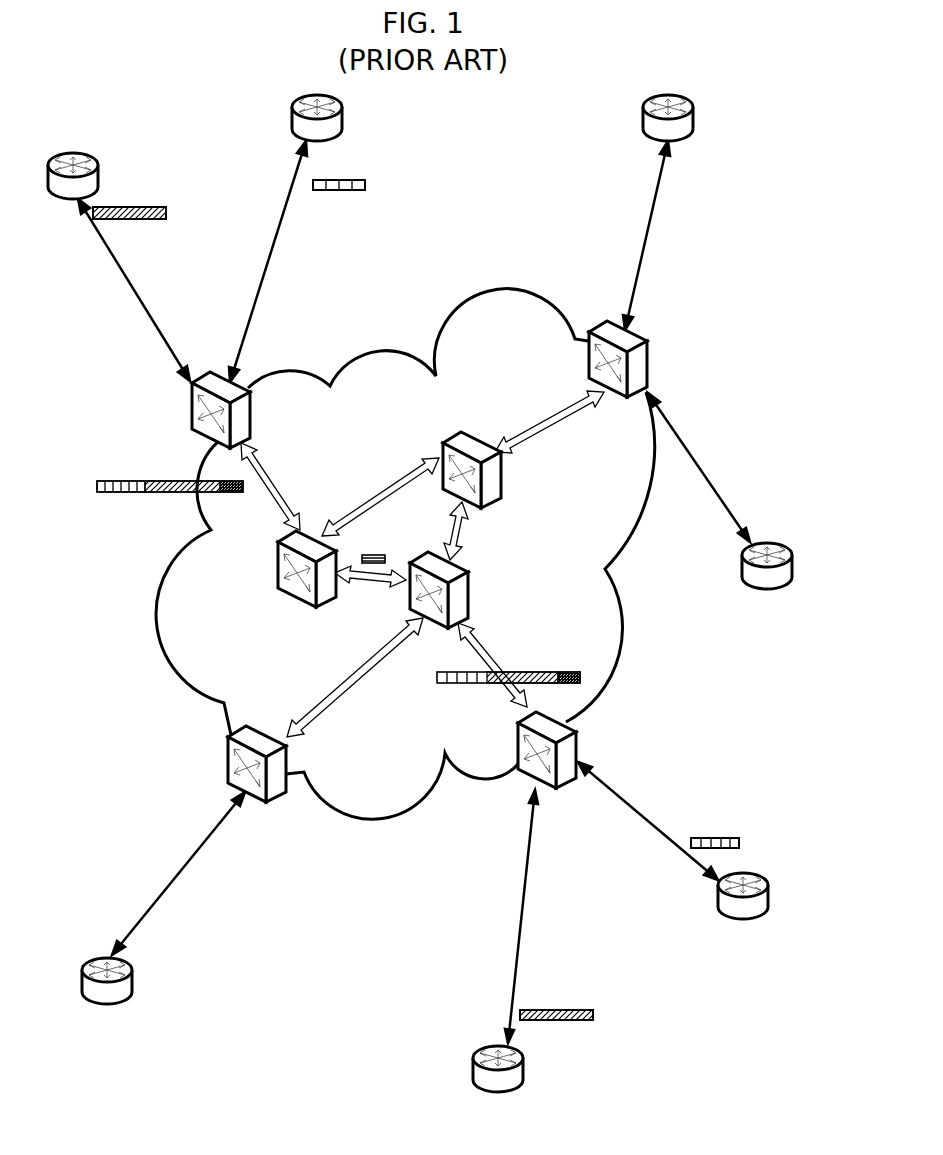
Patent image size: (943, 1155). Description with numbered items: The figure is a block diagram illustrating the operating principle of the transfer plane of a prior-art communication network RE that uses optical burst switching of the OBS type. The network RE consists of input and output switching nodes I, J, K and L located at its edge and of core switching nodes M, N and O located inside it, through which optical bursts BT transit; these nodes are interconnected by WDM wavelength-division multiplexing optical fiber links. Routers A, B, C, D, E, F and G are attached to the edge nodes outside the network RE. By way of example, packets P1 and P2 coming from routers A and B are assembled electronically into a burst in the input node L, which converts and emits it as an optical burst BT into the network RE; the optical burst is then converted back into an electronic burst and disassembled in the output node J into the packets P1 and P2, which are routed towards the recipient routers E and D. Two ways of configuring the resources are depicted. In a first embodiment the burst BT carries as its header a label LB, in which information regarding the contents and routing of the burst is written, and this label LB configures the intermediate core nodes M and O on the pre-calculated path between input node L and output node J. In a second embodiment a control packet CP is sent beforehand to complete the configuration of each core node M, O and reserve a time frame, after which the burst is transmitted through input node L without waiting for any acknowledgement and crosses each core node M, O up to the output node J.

The router A is at (317, 105).
The router B is at (73, 165).
The router C is at (99, 977).
The recipient router D is at (494, 1063).
The recipient router E is at (735, 896).
The router F is at (767, 555).
The router G is at (668, 105).
The input and output switching node I is at (226, 766).
The output node J is at (553, 784).
The input and output switching node K is at (649, 354).
The input node L is at (190, 411).
The core switching node M is at (299, 594).
The core switching node N is at (503, 498).
The core switching node O is at (470, 592).
The communication network RE is at (157, 606).
The packet P1 is at (343, 603).
The packet P2 is at (418, 504).
The optical burst BT is at (325, 581).
The label LB is at (400, 572).
The control packet CP is at (373, 549).